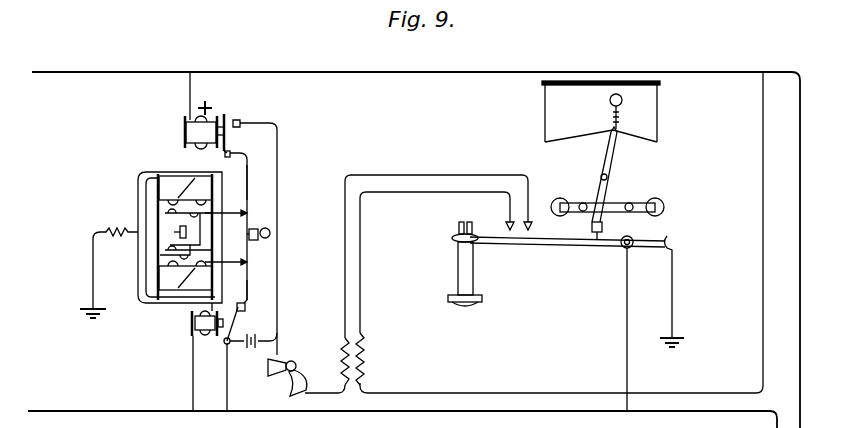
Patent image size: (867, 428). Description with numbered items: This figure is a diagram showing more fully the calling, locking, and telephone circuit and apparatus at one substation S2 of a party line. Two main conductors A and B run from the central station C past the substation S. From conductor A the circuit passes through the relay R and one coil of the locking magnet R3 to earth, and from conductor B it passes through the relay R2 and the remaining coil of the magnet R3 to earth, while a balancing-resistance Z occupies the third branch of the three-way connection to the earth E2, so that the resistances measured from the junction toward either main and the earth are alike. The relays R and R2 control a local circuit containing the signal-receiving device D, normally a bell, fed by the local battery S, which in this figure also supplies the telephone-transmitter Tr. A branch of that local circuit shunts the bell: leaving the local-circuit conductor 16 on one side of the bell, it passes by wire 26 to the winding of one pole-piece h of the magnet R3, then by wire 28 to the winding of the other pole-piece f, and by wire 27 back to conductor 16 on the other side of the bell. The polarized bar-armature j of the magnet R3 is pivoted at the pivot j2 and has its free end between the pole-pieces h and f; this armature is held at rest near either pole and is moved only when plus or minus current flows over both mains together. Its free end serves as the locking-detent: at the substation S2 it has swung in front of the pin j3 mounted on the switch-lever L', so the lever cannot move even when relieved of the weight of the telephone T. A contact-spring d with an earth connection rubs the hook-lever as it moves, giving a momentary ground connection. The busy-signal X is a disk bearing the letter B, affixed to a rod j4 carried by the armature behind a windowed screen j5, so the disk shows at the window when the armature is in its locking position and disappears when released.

The main conductor A is at (416, 240).
The main conductor B is at (402, 261).
The relay R is at (185, 114).
The relay R2 is at (186, 361).
The locking magnet R3 is at (672, 203).
The local-circuit conductor 16 is at (250, 195).
The wire 26 is at (226, 205).
The wire 27 is at (226, 269).
The wire 28 is at (201, 235).
The polar extension h is at (374, 218).
The polarized bar-armature j is at (600, 187).
The polar extension f is at (396, 231).
The balancing-resistance Z is at (115, 268).
The earth connection E2 is at (84, 304).
The signal-receiving device D is at (258, 243).
The central station C is at (250, 295).
The substation S is at (253, 333).
The telephone-transmitter Tr is at (296, 361).
The telephone T is at (457, 264).
The switch-lever L' is at (567, 253).
The substation S2 is at (497, 316).
The busy-signal X is at (630, 97).
The windowed screen j5 is at (582, 111).
The rod j4 is at (619, 138).
The pivot j2 is at (608, 177).
The pin j3 is at (595, 233).
The contact-spring d is at (679, 251).